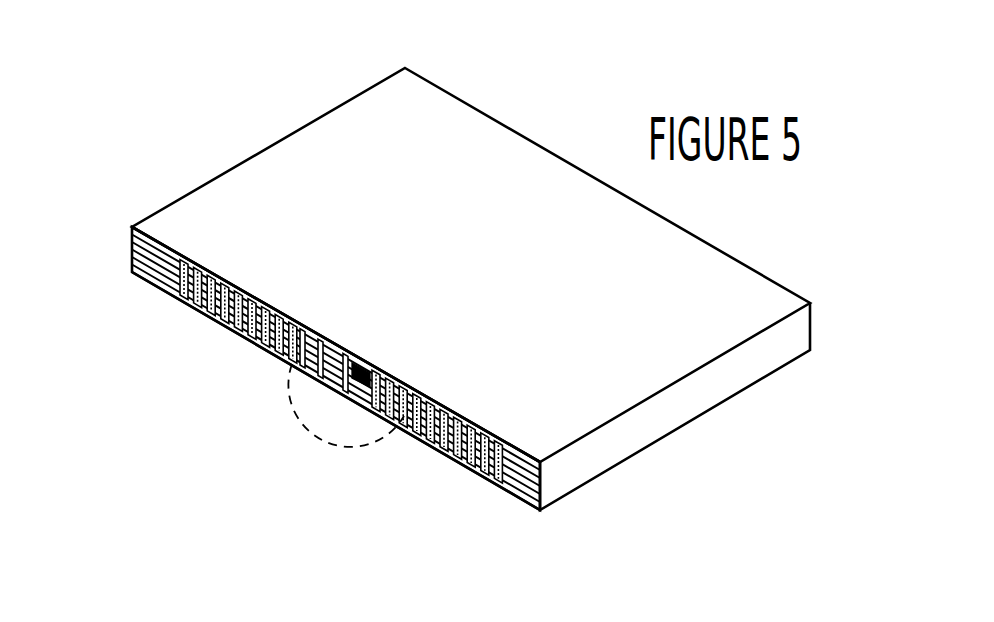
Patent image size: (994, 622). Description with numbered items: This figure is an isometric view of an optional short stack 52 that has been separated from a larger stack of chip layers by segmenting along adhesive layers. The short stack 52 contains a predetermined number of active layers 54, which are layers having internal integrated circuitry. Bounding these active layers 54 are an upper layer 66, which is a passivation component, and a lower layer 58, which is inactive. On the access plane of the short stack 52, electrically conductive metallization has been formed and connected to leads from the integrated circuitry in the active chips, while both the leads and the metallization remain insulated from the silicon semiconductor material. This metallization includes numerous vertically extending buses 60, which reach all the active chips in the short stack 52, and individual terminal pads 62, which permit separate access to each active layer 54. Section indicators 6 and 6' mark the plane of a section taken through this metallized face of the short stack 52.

The short stack 52 is at (437, 113).
The active layers 54 is at (135, 264).
The lower layer 58 is at (147, 282).
The vertically extending buses 60 is at (193, 303).
The terminal pads 62 is at (352, 380).
The upper layer 66 is at (137, 228).
The section arrow 6 is at (322, 288).
The section arrow 6 prime 6' is at (373, 318).